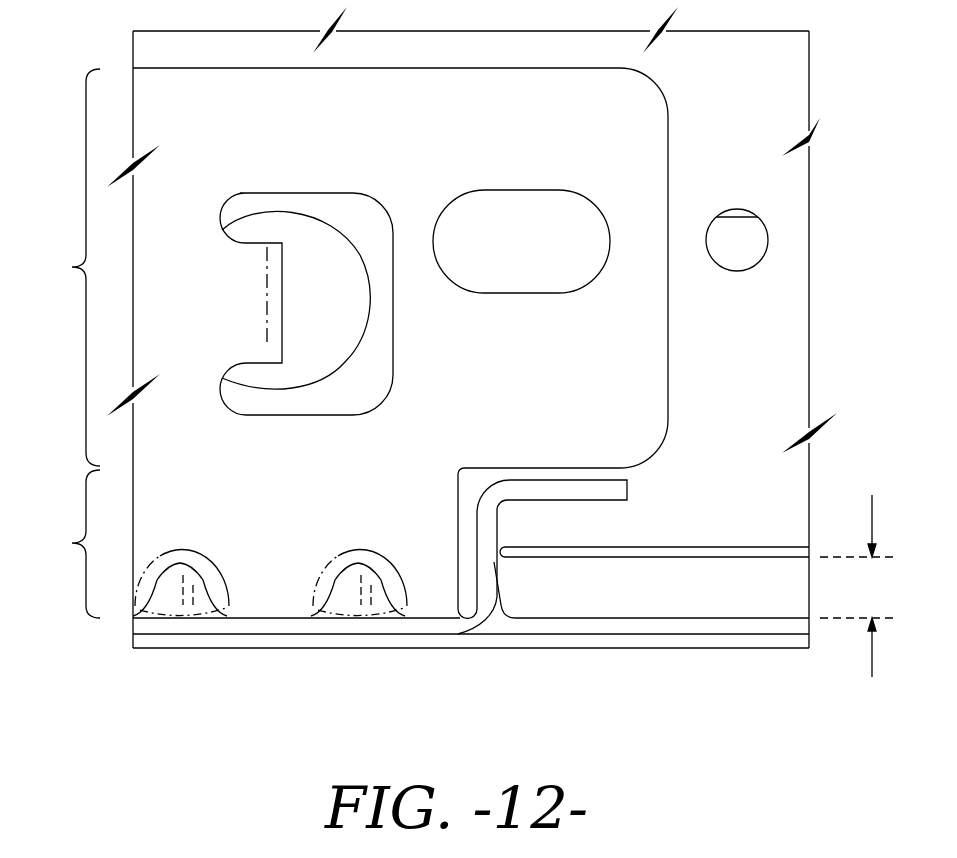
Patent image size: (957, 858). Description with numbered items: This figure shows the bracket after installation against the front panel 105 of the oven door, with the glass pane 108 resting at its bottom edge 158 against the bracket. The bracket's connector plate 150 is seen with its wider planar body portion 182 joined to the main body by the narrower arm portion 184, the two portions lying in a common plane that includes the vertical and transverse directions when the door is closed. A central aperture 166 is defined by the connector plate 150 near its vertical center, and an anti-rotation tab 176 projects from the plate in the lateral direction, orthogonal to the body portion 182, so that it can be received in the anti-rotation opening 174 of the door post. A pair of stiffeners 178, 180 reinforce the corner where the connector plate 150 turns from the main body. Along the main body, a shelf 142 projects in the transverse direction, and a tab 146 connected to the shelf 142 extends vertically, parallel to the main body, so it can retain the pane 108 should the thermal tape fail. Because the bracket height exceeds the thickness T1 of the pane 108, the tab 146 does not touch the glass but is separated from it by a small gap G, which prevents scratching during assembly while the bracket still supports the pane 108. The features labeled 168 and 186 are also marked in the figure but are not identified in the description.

The front panel 105 is at (268, 641).
The pane 108 is at (733, 593).
The shelf 142 is at (486, 538).
The tab 146 is at (597, 478).
The connector plate 150 is at (672, 165).
The bottom edge 158 is at (501, 587).
The central aperture 166 is at (386, 401).
The slot 168 is at (524, 221).
The anti-rotation opening 174 is at (336, 274).
The anti-rotation tab 176 is at (283, 277).
The stiffener 178 is at (191, 578).
The stiffener 180 is at (374, 578).
The planar body portion 182 is at (57, 267).
The arm portion 184 is at (57, 544).
The contact region 186 is at (506, 550).
The gap G is at (626, 521).
The thickness T1 is at (856, 586).